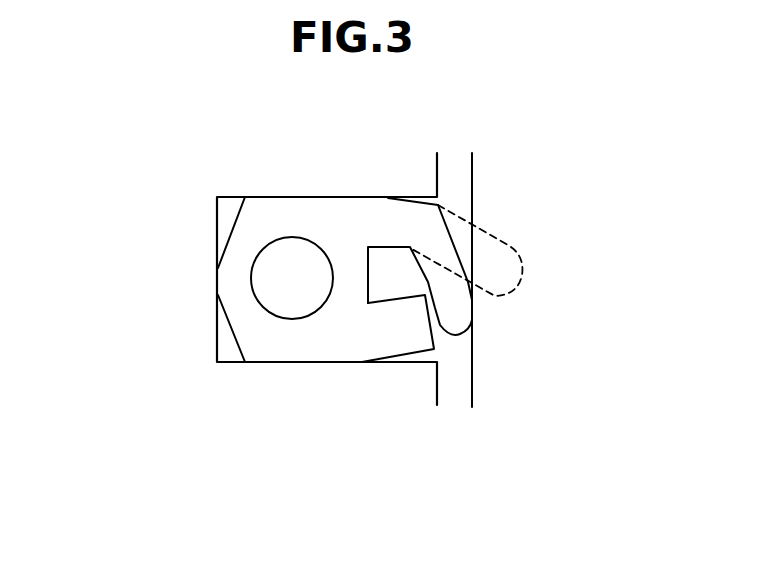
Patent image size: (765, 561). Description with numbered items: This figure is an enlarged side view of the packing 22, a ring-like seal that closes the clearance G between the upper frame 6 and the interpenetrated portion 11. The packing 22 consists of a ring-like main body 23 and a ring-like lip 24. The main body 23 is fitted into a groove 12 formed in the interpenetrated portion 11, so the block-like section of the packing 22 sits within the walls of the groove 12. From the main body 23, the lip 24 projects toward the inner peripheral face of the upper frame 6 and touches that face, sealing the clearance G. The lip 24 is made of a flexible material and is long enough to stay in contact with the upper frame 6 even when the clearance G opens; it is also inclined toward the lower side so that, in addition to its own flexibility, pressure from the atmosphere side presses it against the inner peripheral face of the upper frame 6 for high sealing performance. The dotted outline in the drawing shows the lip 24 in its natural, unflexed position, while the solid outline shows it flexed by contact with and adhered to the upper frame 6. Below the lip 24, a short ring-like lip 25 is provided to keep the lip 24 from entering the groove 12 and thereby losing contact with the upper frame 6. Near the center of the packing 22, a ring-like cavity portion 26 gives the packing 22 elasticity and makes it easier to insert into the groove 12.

The interpenetrated portion 11 is at (346, 152).
The upper frame 6 is at (532, 152).
The packing 22 is at (227, 230).
The groove 12 is at (218, 340).
The main body 23 is at (354, 232).
The lip 24 is at (455, 313).
The short lip 25 is at (404, 346).
The cavity portion 26 is at (308, 293).
The clearance G is at (457, 385).